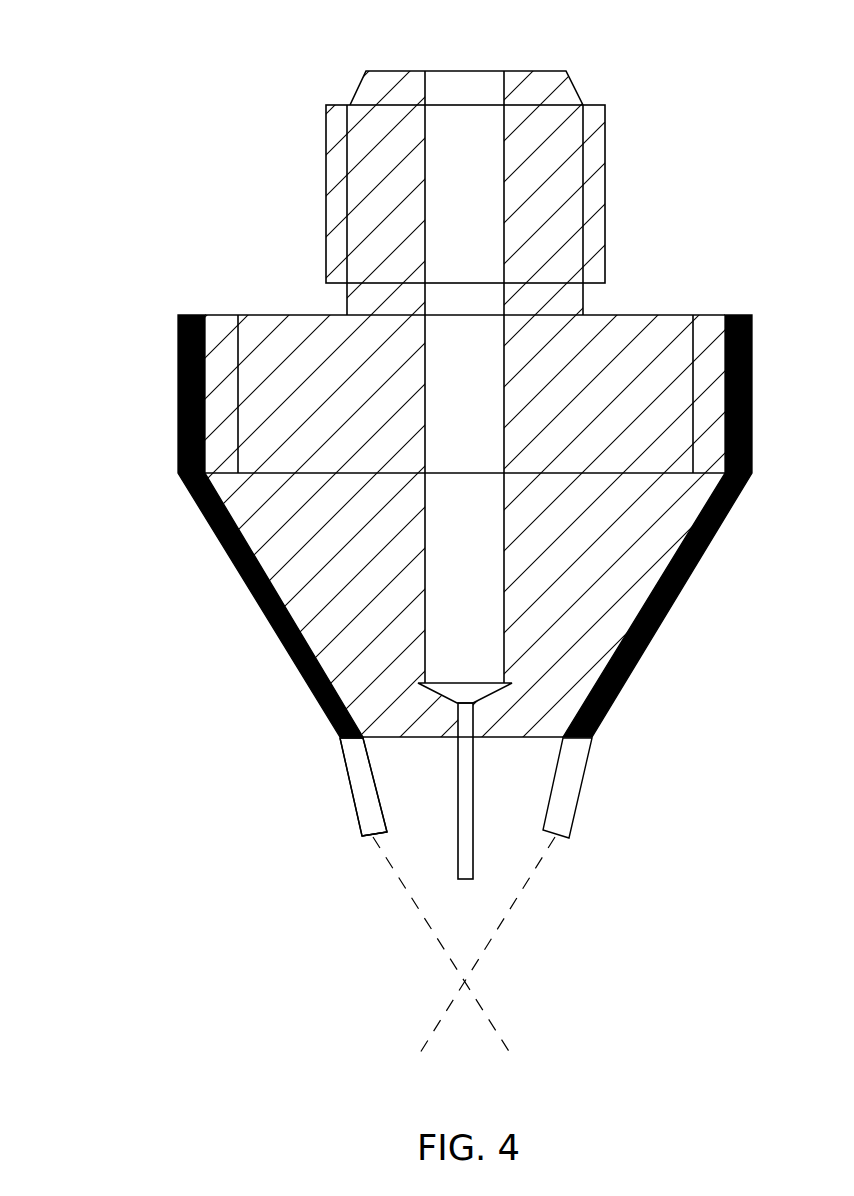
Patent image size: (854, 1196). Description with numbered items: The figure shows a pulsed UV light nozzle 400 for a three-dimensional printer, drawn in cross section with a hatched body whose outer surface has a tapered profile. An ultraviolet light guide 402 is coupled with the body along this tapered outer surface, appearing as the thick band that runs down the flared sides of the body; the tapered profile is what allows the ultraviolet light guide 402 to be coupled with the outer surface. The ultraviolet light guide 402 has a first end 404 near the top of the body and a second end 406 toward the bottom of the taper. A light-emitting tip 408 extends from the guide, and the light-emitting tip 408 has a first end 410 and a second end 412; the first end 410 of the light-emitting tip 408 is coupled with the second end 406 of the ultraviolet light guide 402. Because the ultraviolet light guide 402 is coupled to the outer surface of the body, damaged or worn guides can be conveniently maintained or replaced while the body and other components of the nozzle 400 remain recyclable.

The pulsed UV light nozzle 400 is at (198, 56).
The ultraviolet light guide 402 is at (240, 590).
The first end of ultraviolet light guide 404 is at (172, 361).
The second end of ultraviolet light guide 406 is at (302, 700).
The light-emitting tip 408 is at (361, 793).
The first end of light-emitting tip 410 is at (351, 748).
The second end of light-emitting tip 412 is at (361, 828).